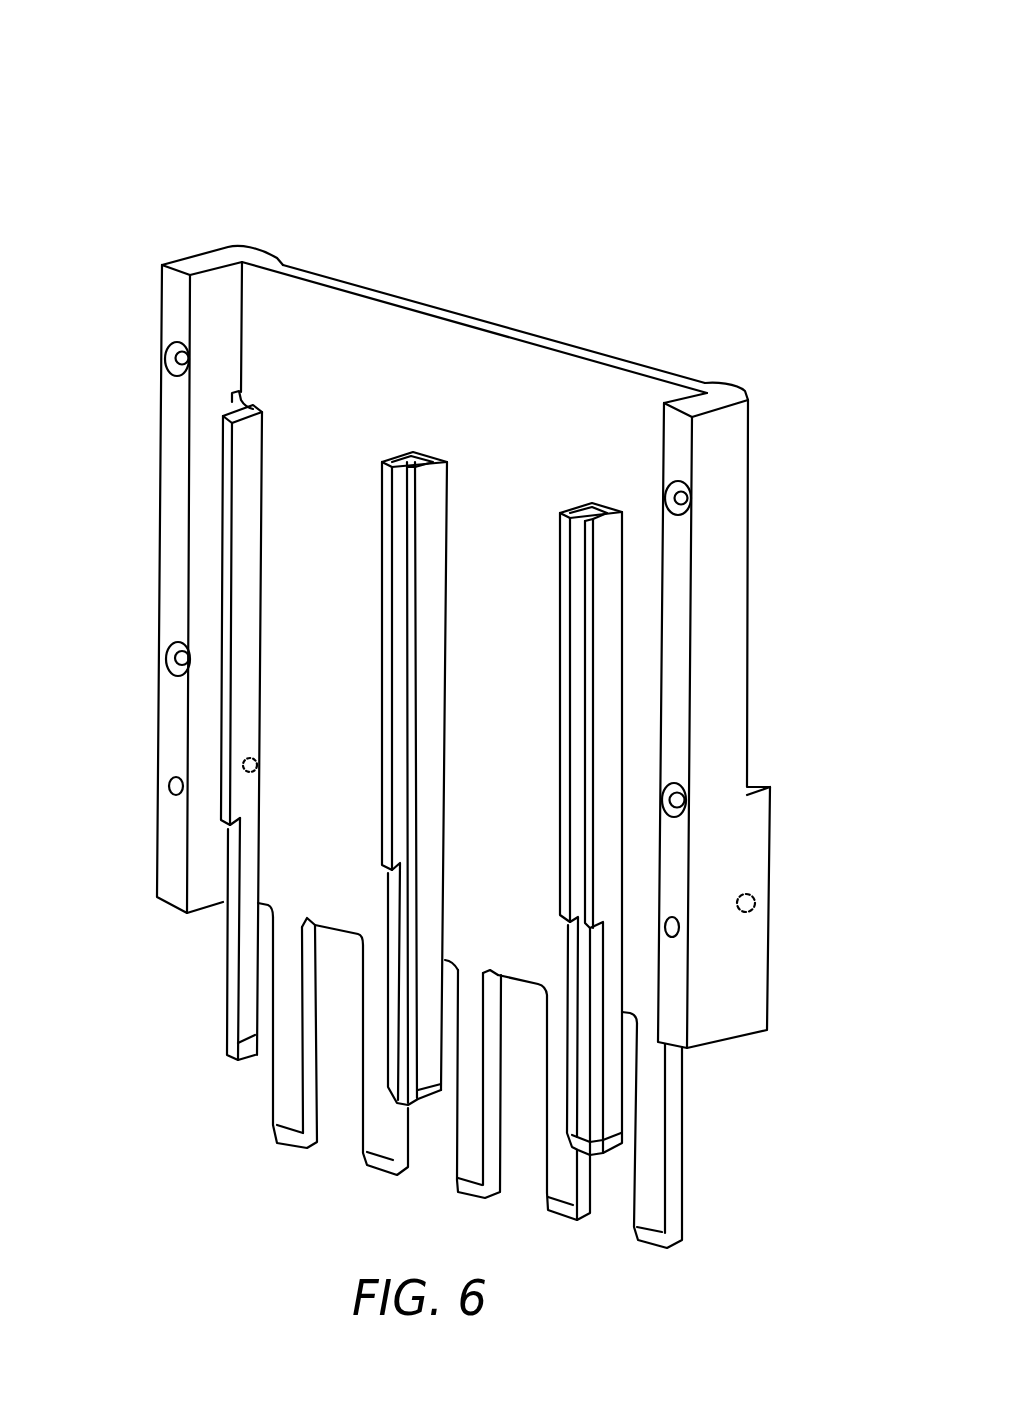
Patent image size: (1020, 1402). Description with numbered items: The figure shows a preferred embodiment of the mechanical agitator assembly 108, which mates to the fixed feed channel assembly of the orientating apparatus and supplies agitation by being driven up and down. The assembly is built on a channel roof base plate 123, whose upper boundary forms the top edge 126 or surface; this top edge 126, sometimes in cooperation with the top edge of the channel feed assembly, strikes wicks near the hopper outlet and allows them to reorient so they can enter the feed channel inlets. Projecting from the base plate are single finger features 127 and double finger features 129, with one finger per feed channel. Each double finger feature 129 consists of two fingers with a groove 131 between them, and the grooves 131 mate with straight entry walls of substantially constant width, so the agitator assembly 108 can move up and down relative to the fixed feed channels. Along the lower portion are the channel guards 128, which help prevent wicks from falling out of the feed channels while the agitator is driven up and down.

The mechanical agitator assembly 108 is at (326, 131).
The channel roof base plate 123 is at (583, 378).
The top edge 126 is at (368, 288).
The single finger features 127 is at (228, 402).
The double finger features 129 is at (612, 548).
The groove 131 is at (405, 460).
The channel guards 128 is at (287, 1075).